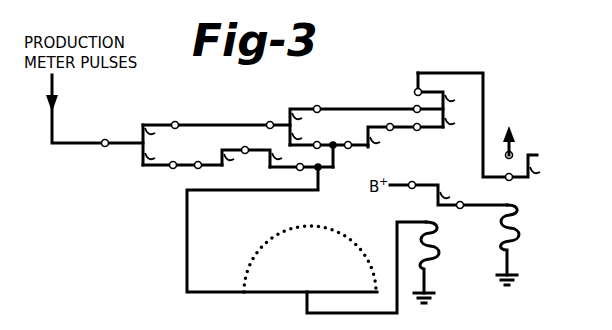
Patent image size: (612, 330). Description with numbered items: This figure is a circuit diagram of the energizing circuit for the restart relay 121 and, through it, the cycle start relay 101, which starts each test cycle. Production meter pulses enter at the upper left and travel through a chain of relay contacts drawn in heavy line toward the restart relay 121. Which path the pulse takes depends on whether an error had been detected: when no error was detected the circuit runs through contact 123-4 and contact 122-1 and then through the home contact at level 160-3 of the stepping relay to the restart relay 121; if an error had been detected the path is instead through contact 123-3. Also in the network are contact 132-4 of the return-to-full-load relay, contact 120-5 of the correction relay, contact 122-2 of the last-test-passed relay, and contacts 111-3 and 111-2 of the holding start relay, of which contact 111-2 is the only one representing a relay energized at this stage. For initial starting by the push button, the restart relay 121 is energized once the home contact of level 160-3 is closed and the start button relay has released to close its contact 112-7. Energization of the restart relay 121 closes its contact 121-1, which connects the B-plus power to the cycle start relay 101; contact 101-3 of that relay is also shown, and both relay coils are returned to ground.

The contact of correction-needed relay 123-4 is at (216, 135).
The contact of correction-needed relay 123-3 is at (182, 159).
The contact of return-to-full-load relay 132-4 is at (246, 157).
The contact of correction relay 120-5 is at (301, 161).
The contact of last-test-passed relay 122-2 is at (366, 126).
The contact of last-test-passed relay 122-1 is at (329, 140).
The contact of start button relay 112-7 is at (396, 146).
The contact of holding start relay 111-3 is at (450, 100).
The contact of holding start relay 111-2 is at (427, 131).
The contact of cycle start relay 101-3 is at (498, 127).
The contact of restart relay 121-1 is at (448, 195).
The restart relay 121 is at (434, 259).
The cycle start relay 101 is at (520, 260).
The level of stepping relay 160-3 is at (310, 269).